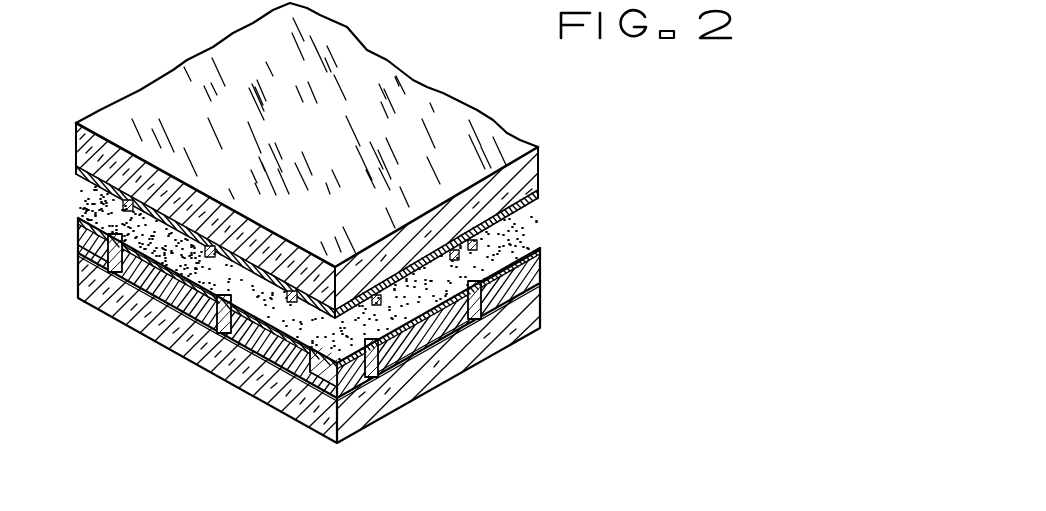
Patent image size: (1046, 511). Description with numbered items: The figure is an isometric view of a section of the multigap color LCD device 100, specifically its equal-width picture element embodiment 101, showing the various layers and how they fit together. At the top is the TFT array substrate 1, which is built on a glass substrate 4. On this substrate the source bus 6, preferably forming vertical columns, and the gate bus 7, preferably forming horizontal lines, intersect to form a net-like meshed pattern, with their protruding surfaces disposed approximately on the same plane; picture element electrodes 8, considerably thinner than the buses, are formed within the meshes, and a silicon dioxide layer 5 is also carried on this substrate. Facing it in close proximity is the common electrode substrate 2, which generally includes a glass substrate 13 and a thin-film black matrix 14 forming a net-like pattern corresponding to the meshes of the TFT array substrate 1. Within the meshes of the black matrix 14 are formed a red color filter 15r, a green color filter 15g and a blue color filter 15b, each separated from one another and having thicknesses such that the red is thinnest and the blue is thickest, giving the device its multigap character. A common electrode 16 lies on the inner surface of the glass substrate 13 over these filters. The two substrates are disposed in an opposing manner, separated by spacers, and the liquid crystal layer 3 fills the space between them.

The multigap color LCD device 100 is at (565, 98).
The equal-width picture element embodiment 101 is at (180, 58).
The TFT array substrate 1 is at (560, 180).
The glass substrate 4 is at (522, 172).
The picture element electrodes 8 is at (237, 268).
The SiO2 layer 5 is at (520, 229).
The common electrode substrate 2 is at (560, 294).
The source bus 6 is at (220, 255).
The gate bus 7 is at (540, 237).
The liquid crystal layer 3 is at (395, 305).
The glass substrate 13 is at (350, 420).
The black matrix 14 is at (302, 380).
The red color filter 15r is at (90, 252).
The green color filter 15g is at (187, 292).
The blue color filter 15b is at (258, 333).
The common electrode 16 is at (307, 350).